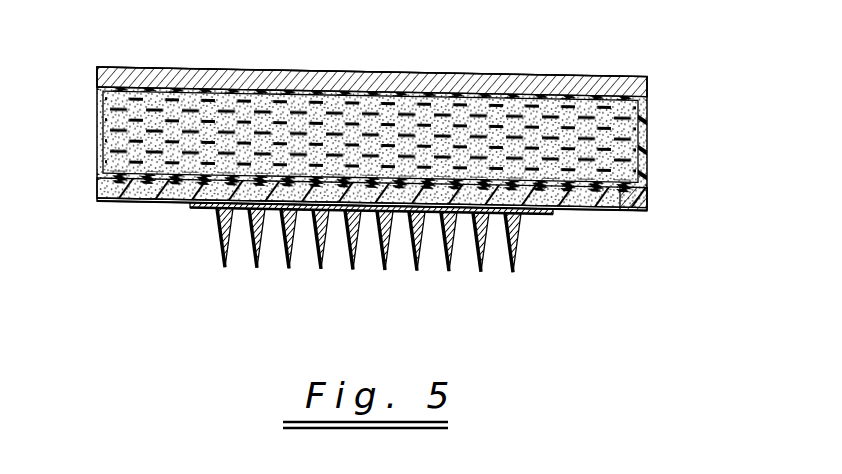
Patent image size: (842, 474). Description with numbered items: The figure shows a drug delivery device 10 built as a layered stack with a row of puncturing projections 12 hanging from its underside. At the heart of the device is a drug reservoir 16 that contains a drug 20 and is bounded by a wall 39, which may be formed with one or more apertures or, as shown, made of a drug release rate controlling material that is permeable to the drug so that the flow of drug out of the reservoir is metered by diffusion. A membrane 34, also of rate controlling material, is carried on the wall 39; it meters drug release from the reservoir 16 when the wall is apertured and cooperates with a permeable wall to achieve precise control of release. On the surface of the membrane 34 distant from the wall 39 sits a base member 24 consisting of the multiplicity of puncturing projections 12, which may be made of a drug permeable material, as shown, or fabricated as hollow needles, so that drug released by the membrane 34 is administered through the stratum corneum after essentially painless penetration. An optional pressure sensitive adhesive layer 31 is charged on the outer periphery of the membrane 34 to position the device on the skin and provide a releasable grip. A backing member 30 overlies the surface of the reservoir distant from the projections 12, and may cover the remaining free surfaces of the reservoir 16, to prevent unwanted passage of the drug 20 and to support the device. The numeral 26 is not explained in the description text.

The drug delivery device 10 is at (690, 114).
The puncturing projections 12 is at (254, 257).
The drug reservoir 16 is at (116, 141).
The drug 20 is at (350, 218).
The base member 24 is at (193, 210).
The liquid crystal material 26 is at (460, 122).
The backing member 30 is at (333, 80).
The pressure sensitive adhesive layer 31 is at (125, 205).
The membrane 34 is at (97, 192).
The wall 39 is at (618, 212).